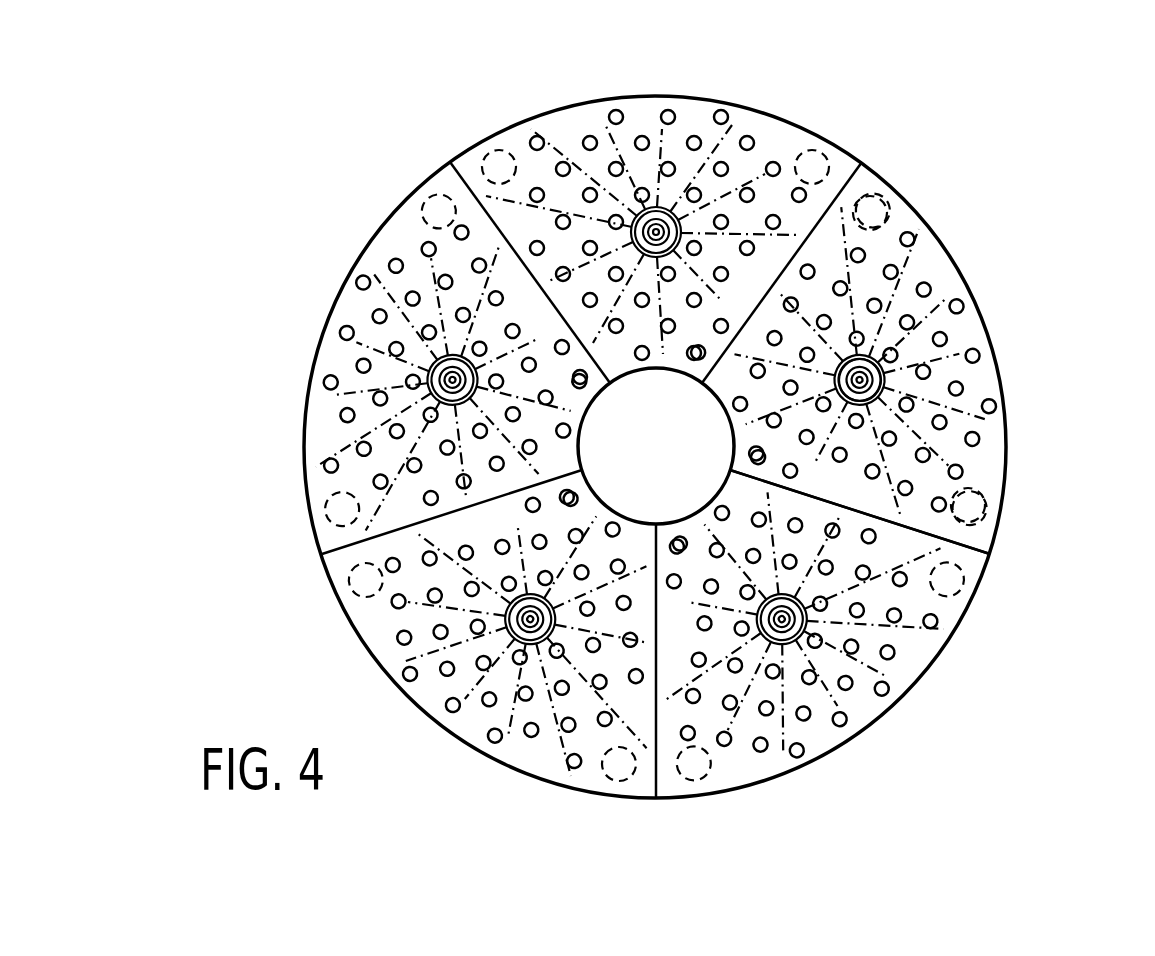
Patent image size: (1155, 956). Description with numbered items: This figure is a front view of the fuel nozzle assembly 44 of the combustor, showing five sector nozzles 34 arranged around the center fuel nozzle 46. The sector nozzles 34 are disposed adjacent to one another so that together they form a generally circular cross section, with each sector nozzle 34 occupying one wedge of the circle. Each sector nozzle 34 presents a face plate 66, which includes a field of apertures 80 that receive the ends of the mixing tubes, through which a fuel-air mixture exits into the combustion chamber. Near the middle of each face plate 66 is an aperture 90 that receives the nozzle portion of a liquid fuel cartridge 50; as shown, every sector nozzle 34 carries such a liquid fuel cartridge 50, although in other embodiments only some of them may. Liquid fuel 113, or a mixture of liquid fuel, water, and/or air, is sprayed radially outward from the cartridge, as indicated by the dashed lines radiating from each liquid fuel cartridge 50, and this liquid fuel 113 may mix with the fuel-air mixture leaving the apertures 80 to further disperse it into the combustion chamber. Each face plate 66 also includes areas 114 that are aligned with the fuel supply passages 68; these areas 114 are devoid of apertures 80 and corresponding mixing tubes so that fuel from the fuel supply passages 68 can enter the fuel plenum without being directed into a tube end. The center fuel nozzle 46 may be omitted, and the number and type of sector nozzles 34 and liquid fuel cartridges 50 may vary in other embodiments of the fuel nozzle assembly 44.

The sector nozzle 34 is at (302, 283).
The fuel nozzle assembly 44 is at (940, 95).
The center fuel nozzle 46 is at (668, 488).
The liquid fuel cartridge 50 is at (653, 227).
The face plate 66 is at (960, 528).
The fuel supply passage 68 is at (893, 206).
The aperture 80 is at (968, 470).
The aperture 90 is at (880, 393).
The liquid fuel 113 is at (730, 128).
The area 114 is at (892, 204).